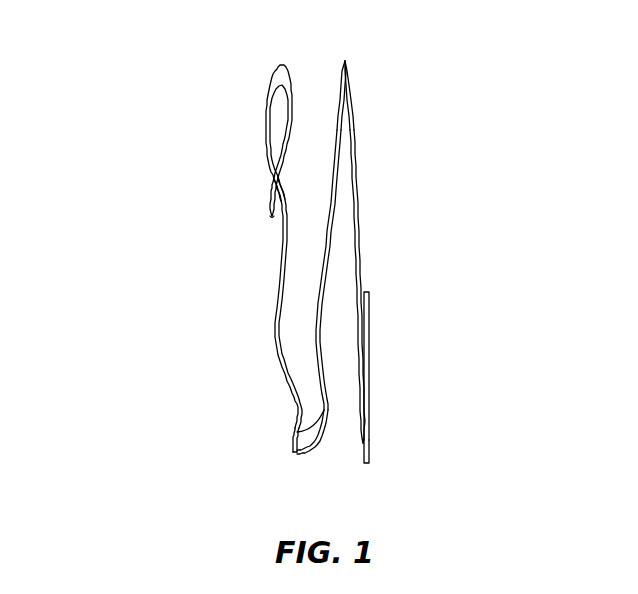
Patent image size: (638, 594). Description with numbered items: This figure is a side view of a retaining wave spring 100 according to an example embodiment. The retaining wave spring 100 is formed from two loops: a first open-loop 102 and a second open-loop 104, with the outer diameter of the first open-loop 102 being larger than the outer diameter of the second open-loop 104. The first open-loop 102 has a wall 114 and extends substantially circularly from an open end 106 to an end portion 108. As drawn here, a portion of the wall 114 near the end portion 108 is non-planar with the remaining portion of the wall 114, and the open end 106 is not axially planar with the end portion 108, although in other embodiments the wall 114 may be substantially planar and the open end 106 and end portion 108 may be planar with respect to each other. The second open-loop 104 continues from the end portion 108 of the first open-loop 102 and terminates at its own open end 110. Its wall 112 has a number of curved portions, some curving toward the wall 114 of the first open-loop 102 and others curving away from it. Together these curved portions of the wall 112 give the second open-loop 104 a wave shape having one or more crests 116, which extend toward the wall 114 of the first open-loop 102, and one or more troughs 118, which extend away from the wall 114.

The retaining wave spring 100 is at (150, 46).
The first open-loop 102 is at (361, 451).
The second open-loop 104 is at (292, 430).
The open end 106 is at (367, 291).
The end portion 108 is at (336, 240).
The open end 110 is at (270, 221).
The wall 112 is at (294, 440).
The wall 114 is at (369, 446).
The crests 116 is at (292, 237).
The troughs 118 is at (278, 325).